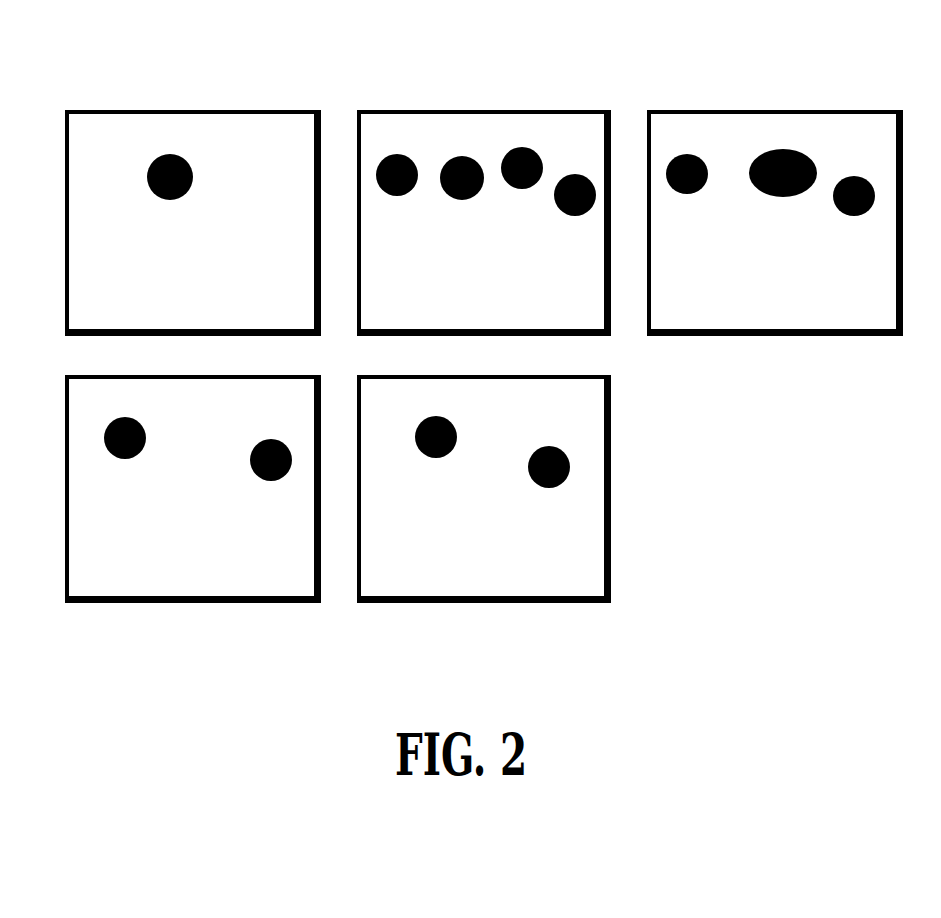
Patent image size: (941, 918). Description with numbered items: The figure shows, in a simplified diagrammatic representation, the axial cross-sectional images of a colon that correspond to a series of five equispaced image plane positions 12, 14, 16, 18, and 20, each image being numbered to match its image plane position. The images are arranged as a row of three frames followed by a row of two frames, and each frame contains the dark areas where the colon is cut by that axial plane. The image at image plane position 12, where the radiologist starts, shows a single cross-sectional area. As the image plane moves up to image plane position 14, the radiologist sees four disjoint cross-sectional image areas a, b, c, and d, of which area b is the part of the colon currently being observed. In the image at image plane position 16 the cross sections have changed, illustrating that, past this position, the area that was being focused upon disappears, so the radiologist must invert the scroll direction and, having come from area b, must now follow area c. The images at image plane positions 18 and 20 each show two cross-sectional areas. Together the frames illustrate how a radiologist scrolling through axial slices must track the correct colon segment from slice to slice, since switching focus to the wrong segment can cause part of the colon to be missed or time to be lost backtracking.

The image plane position 12 is at (218, 138).
The image plane position 14 is at (483, 182).
The image plane position 16 is at (773, 128).
The image plane position 18 is at (190, 570).
The image plane position 20 is at (453, 582).
The cross-sectional image area a is at (380, 188).
The cross-sectional image area b is at (438, 183).
The cross-sectional image area c is at (503, 183).
The cross-sectional image area d is at (582, 218).